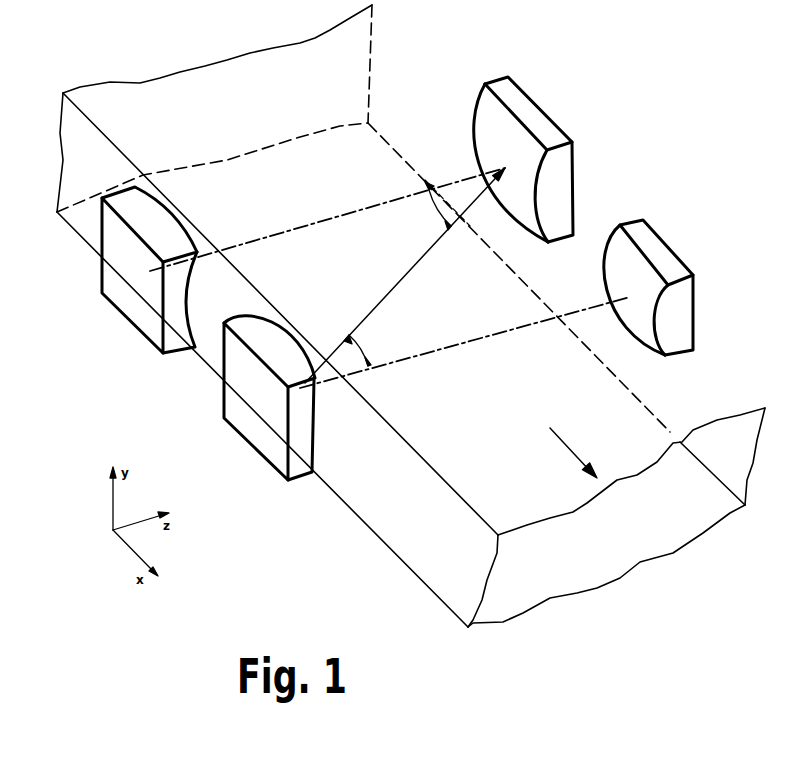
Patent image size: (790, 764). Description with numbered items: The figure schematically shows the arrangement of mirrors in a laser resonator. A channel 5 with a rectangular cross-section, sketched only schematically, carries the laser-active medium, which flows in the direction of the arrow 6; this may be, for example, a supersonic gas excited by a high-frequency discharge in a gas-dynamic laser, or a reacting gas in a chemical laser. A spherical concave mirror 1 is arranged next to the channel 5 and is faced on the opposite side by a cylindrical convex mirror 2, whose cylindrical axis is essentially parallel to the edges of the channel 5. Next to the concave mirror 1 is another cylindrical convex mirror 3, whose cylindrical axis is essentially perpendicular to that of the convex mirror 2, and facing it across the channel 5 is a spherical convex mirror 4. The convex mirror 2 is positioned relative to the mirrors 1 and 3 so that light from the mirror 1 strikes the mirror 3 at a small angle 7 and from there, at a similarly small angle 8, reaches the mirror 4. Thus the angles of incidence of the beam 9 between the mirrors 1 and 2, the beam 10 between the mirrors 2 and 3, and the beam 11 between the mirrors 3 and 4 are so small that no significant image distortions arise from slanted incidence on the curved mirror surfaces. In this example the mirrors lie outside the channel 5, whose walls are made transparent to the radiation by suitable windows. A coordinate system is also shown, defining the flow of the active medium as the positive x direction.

The spherical concave mirror 1 is at (125, 285).
The cylindrical convex mirror 2 is at (528, 112).
The cylindrical convex mirror 3 is at (257, 423).
The spherical convex mirror 4 is at (658, 250).
The channel 5 is at (227, 72).
The arrow 6 is at (573, 445).
The angle 7 is at (428, 206).
The angle 8 is at (362, 342).
The beam 9 is at (349, 207).
The beam 10 is at (415, 262).
The beam 11 is at (510, 332).